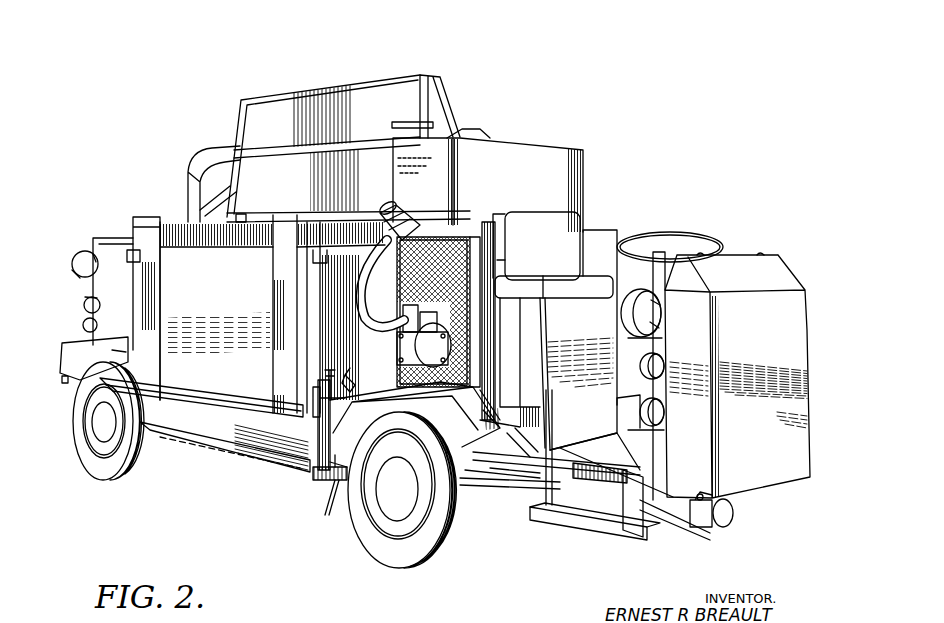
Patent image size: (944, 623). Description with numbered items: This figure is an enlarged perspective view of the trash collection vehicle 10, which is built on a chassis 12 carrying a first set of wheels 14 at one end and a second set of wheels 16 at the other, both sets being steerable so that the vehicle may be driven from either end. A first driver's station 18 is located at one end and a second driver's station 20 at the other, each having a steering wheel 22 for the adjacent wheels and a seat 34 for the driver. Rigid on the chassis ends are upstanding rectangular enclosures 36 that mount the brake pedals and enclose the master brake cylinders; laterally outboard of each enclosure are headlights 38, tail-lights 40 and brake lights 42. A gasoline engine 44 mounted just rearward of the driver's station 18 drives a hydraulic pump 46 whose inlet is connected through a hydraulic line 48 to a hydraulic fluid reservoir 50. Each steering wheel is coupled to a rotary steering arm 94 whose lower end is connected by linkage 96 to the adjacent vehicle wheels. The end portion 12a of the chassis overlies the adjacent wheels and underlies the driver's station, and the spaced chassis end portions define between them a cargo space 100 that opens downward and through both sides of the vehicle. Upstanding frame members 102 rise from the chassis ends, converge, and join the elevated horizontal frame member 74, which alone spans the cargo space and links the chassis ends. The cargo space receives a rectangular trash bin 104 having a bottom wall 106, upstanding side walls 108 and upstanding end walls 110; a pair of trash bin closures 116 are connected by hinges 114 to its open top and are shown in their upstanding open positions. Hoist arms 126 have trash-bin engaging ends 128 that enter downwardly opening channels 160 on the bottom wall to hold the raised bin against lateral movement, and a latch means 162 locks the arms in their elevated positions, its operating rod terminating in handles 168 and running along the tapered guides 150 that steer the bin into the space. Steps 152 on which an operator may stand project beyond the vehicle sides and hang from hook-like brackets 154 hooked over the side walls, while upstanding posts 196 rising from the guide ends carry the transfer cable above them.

The trash collection vehicle 10 is at (606, 131).
The chassis 12 is at (572, 468).
The end portion of the chassis 12a is at (530, 477).
The first set of wheels 14 is at (393, 566).
The second set of wheels 16 is at (86, 471).
The first driver's cab or station 18 is at (647, 218).
The second driver's cab or station 20 is at (143, 205).
The steering wheel 22 is at (703, 234).
The seat 34 is at (606, 262).
The upstanding rectangular enclosure 36 is at (90, 243).
The headlights 38 is at (73, 262).
The tail-lights 40 is at (84, 302).
The brake lights 42 is at (82, 324).
The gasoline engine 44 is at (588, 233).
The hydraulic pump 46 is at (398, 348).
The hydraulic line 48 is at (380, 312).
The hydraulic fluid reservoir 50 is at (510, 150).
The horizontal frame member 74 is at (450, 130).
The rotary steering arm 94 is at (728, 522).
The linkage 96 is at (672, 522).
The cargo space 100 is at (230, 196).
The upstanding frame members 102 is at (190, 195).
The trash receptacle or bin 104 is at (222, 432).
The bottom wall 106 is at (242, 455).
The upstanding side walls 108 is at (232, 312).
The upstanding end walls 110 is at (315, 466).
The hinges 114 is at (246, 216).
The trash bin closures 116 is at (405, 88).
The trash bin hoist arms 126 is at (331, 500).
The trash-bin engaging ends 128 is at (318, 482).
The guides 150 is at (313, 397).
The steps 152 is at (195, 400).
The hook-like brackets 154 is at (282, 258).
The downwardly opening channels 160 is at (322, 478).
The latch means 162 is at (352, 360).
The handles 168 is at (402, 400).
The upstanding posts 196 is at (330, 380).